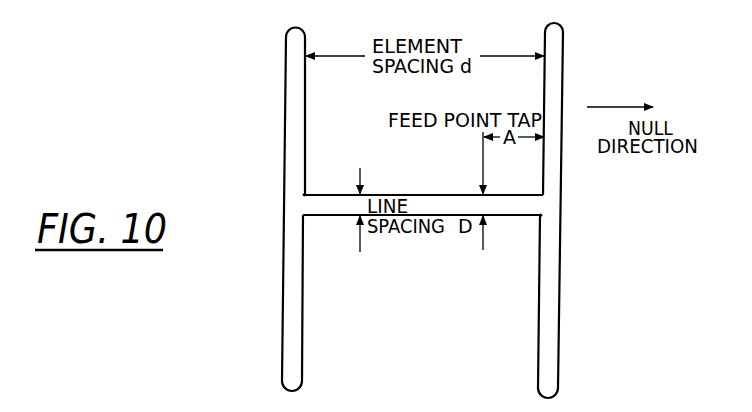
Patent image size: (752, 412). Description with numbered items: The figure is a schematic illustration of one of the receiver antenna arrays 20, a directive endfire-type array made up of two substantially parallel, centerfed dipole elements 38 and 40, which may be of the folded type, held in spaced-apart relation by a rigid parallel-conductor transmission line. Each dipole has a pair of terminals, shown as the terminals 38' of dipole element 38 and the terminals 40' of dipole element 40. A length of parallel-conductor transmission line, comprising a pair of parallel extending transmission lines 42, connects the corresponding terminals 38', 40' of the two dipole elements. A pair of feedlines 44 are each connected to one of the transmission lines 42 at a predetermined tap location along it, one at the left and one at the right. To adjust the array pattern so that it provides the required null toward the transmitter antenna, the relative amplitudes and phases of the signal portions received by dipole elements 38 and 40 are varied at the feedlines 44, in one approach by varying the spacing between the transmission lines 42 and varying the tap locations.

The receiver antenna array 20 is at (162, 147).
The dipole element 38 is at (570, 210).
The terminals of dipole element 38 38' is at (520, 231).
The dipole element 40 is at (267, 210).
The terminals of dipole element 40 40' is at (319, 221).
The transmission lines 42 is at (396, 194).
The feedlines 44 is at (483, 172).